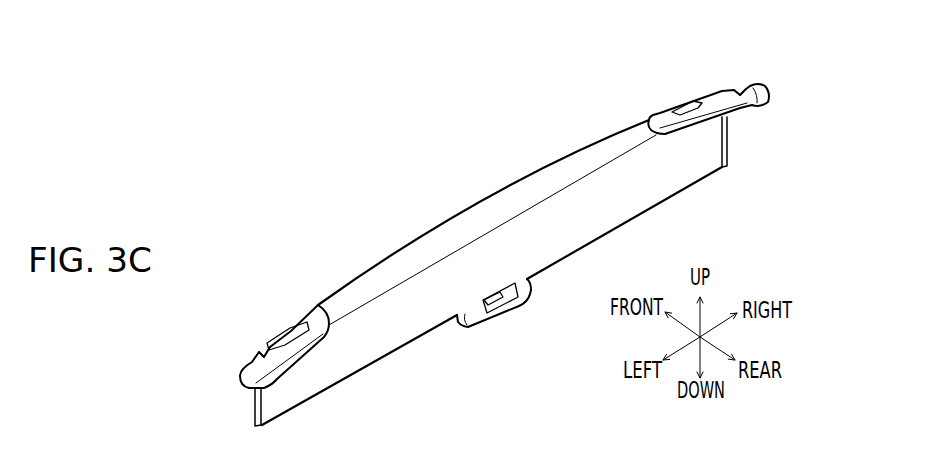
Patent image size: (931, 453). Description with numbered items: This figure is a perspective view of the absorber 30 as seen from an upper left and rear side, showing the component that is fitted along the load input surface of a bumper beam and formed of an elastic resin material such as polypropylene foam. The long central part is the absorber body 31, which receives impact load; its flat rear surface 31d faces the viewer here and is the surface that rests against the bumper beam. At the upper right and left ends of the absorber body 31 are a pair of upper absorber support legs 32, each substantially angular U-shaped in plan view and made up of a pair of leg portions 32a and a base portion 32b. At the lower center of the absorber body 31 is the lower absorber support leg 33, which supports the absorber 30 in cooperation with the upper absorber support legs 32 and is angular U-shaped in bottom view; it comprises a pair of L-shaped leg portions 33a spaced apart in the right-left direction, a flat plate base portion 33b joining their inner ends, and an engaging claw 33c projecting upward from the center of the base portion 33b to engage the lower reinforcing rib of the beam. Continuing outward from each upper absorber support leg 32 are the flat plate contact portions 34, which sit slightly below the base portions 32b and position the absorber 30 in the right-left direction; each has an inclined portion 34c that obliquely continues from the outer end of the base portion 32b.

The absorber 30 is at (393, 242).
The absorber body 31 is at (455, 228).
The rear surface 31d is at (550, 225).
The upper absorber support leg 32 is at (316, 355).
The leg portion 32a is at (305, 318).
The base portion 32b is at (283, 358).
The lower absorber support leg 33 is at (535, 304).
The leg portion 33a is at (521, 285).
The base portion 33b is at (488, 322).
The engaging claw 33c is at (513, 312).
The contact portion 34 is at (240, 373).
The inclined portion 34c is at (257, 360).